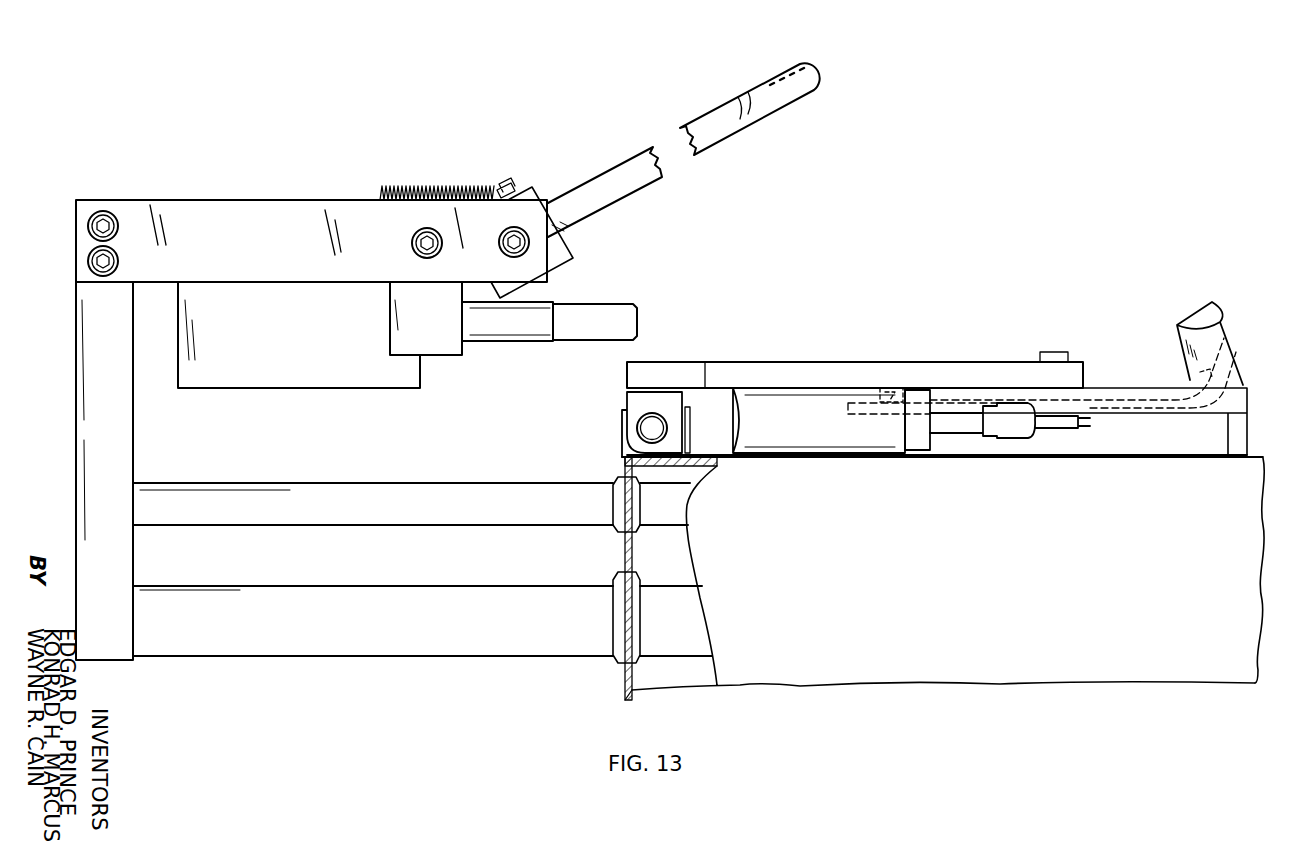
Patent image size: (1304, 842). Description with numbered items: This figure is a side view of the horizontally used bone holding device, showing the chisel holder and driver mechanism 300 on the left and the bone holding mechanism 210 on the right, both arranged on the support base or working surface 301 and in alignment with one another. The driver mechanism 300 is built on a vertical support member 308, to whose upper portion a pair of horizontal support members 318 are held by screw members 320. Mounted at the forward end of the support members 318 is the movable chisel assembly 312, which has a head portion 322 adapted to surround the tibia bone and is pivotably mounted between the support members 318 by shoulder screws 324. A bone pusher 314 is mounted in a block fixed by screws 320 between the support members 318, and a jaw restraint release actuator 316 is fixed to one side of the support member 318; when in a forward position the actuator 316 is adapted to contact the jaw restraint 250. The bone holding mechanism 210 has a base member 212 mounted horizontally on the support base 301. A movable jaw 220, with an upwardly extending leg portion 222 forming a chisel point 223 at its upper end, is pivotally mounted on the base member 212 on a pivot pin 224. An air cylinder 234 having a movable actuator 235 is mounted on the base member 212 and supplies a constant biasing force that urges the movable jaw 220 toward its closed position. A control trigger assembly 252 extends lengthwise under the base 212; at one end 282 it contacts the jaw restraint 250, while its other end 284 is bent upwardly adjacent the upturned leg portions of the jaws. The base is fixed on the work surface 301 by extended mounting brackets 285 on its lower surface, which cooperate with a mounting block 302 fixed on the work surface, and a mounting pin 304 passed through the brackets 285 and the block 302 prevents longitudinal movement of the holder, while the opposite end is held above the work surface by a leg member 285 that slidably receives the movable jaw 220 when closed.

The chisel holder and driver mechanism 300 is at (586, 146).
The head portion 322 is at (797, 92).
The chisel assembly 312 is at (640, 178).
The shoulder screws 324 is at (405, 196).
The horizontal support members 318 is at (203, 212).
The screw members 320 is at (93, 215).
The jaw restraint release actuator 316 is at (298, 354).
The vertical support member 308 is at (93, 361).
The bone pusher 314 is at (625, 325).
The bone holding mechanism 210 is at (880, 312).
The base member 212 is at (860, 367).
The pivot pin 224 is at (1052, 357).
The movable jaw 220 is at (1230, 403).
The mounting block 302 is at (625, 411).
The mounting pin 304 is at (650, 428).
The mounting brackets 285 is at (638, 440).
The air cylinder 234 is at (822, 430).
The movable actuator 235 is at (965, 425).
The jaw restraint 250 is at (846, 410).
The end of control trigger assembly 282 is at (890, 390).
The other end of control trigger assembly 284 is at (1188, 372).
The leg portion 222 is at (1222, 350).
The chisel point 223 is at (1196, 318).
The control trigger assembly 252 is at (1190, 412).
The support base 301 is at (948, 619).